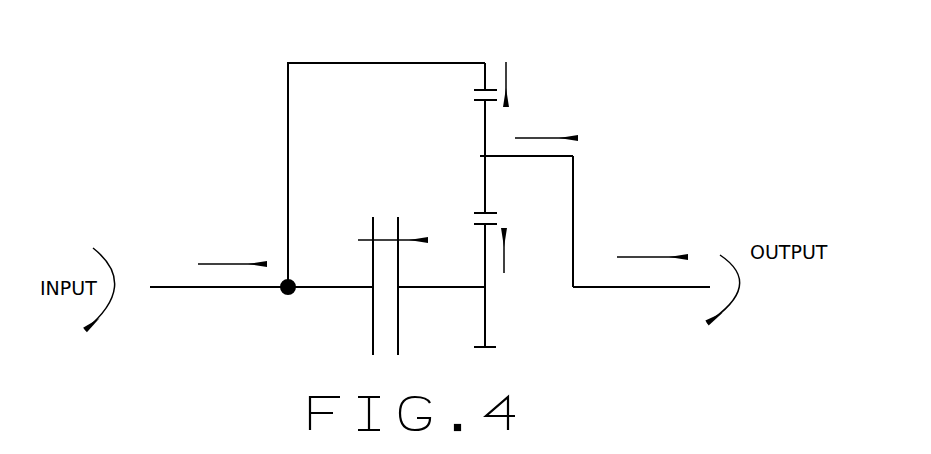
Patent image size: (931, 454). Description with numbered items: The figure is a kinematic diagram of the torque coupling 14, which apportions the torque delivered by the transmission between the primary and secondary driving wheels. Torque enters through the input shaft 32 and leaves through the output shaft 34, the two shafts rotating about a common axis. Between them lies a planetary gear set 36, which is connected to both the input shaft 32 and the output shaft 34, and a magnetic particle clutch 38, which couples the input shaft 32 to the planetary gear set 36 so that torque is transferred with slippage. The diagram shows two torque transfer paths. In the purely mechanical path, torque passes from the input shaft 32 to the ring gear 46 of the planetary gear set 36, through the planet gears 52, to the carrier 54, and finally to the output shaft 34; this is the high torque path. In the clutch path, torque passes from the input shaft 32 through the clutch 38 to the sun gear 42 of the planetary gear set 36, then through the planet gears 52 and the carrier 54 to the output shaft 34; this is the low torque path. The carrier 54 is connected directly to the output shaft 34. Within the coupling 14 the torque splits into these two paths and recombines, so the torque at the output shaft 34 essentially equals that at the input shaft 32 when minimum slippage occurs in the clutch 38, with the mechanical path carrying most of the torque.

The torque coupling 14 is at (267, 168).
The input shaft 32 is at (215, 290).
The output shaft 34 is at (608, 288).
The planetary gear set 36 is at (497, 128).
The magnetic particle clutch 38 is at (388, 210).
The sun gear 42 is at (485, 302).
The ring gear 46 is at (489, 73).
The planet gears 52 is at (485, 140).
The carrier 54 is at (575, 183).